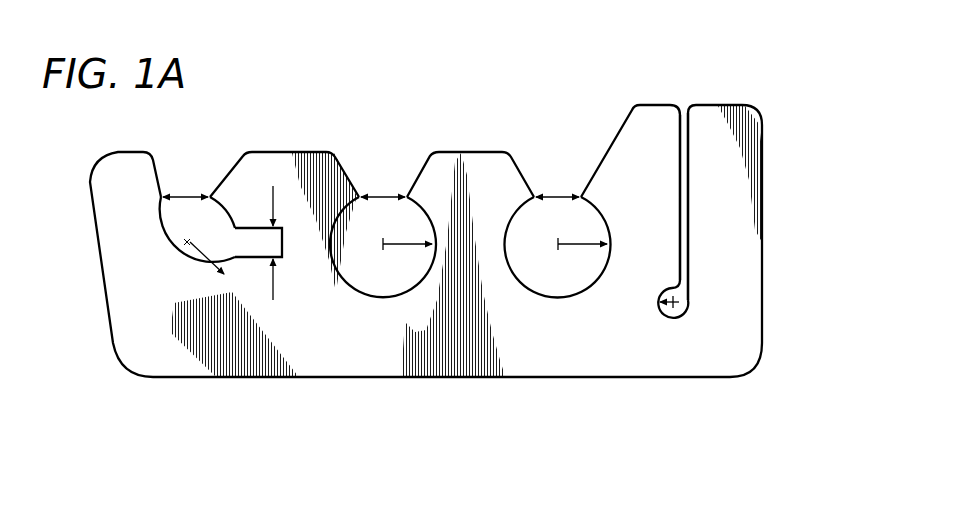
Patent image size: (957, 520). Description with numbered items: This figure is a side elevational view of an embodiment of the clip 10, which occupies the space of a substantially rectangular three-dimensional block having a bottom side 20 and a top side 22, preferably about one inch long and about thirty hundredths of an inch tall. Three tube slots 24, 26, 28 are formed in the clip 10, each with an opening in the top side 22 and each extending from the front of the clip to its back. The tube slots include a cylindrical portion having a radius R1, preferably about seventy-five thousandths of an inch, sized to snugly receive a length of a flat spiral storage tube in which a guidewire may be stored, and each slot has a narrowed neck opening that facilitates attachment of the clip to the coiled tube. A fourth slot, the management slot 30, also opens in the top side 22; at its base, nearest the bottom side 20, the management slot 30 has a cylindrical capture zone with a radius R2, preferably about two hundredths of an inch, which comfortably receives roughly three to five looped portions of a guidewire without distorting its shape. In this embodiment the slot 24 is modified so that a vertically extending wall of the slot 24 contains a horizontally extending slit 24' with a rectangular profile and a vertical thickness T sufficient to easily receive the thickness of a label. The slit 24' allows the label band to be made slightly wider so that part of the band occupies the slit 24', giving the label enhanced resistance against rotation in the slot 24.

The clip 10 is at (646, 74).
The bottom side 20 is at (332, 380).
The top side 22 is at (283, 152).
The tube slot 24 is at (138, 259).
The horizontally extending slit 24' is at (252, 181).
The tube slot 26 is at (427, 288).
The tube slot 28 is at (602, 288).
The management slot 30 is at (688, 173).
The radius of cylindrical portion of tube slot R1 is at (381, 248).
The radius of capture zone R2 is at (680, 312).
The vertical thickness of slit T is at (286, 243).